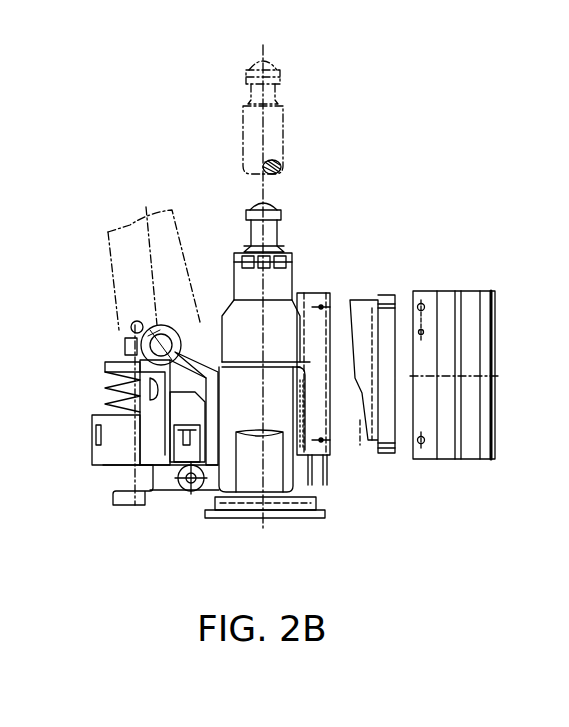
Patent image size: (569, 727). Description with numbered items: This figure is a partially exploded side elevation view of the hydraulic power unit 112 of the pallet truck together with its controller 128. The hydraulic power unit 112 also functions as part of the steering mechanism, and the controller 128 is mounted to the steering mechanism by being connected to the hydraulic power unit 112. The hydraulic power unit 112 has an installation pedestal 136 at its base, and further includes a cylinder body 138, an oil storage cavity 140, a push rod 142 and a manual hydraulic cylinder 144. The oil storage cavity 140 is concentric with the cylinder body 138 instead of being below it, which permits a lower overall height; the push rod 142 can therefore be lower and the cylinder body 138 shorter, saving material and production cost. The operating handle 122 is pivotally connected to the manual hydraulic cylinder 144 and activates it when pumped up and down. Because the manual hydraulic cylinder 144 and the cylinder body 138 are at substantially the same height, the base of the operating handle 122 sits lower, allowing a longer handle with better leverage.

The hydraulic power unit 112 is at (372, 110).
The operating handle 122 is at (122, 262).
The controller 128 is at (476, 315).
The installation pedestal 136 is at (325, 510).
The cylinder body 138 is at (222, 462).
The oil storage cavity 140 is at (240, 318).
The push rod 142 is at (270, 232).
The manual hydraulic cylinder 144 is at (103, 418).